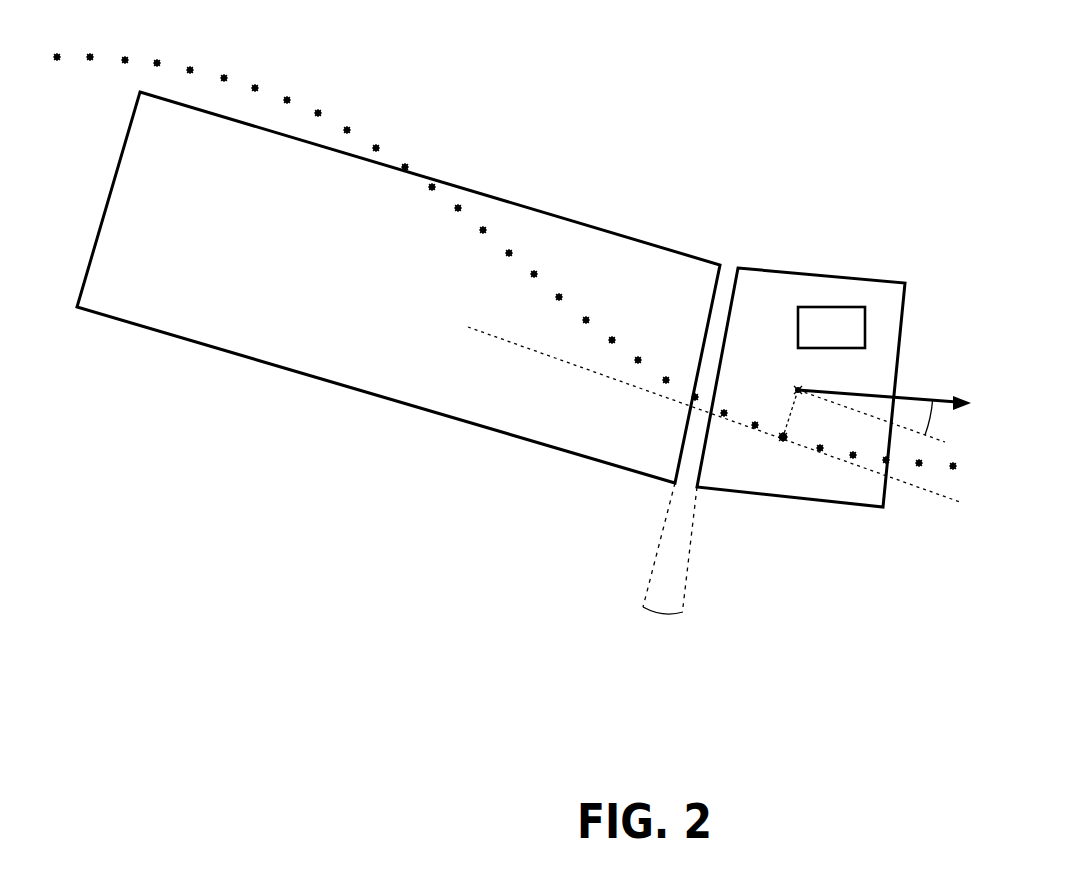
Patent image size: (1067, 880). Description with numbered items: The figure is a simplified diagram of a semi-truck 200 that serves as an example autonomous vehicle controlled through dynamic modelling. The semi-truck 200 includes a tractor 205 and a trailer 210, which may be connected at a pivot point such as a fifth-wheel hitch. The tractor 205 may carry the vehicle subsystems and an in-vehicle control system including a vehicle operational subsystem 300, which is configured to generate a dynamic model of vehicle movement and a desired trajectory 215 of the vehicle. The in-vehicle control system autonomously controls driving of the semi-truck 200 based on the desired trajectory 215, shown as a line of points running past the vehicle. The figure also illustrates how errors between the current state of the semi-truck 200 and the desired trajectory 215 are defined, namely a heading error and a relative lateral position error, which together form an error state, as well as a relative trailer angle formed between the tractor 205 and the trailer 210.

The semi-truck 200 is at (572, 86).
The tractor 205 is at (812, 276).
The trailer 210 is at (310, 376).
The desired trajectory 215 is at (158, 62).
The vehicle operational subsystem 300 is at (865, 329).